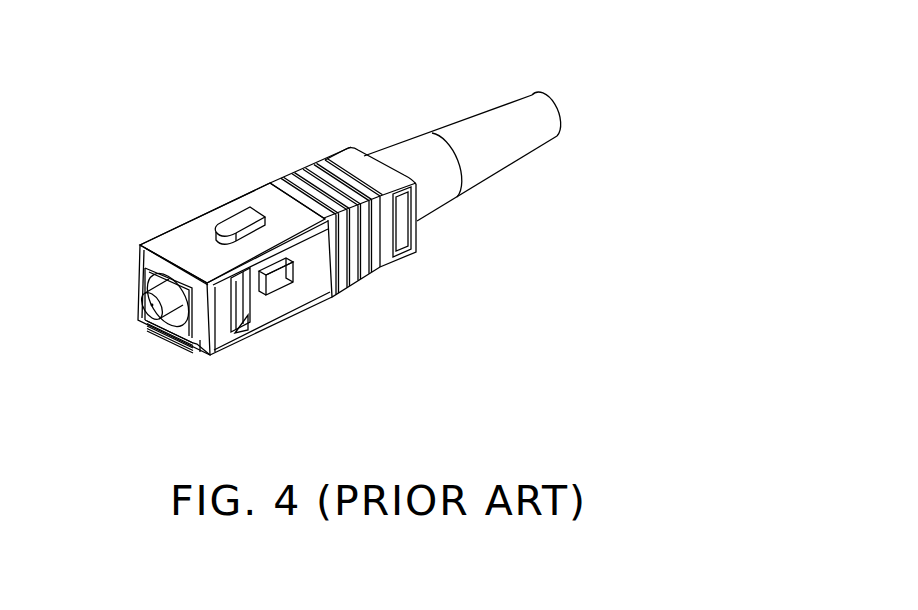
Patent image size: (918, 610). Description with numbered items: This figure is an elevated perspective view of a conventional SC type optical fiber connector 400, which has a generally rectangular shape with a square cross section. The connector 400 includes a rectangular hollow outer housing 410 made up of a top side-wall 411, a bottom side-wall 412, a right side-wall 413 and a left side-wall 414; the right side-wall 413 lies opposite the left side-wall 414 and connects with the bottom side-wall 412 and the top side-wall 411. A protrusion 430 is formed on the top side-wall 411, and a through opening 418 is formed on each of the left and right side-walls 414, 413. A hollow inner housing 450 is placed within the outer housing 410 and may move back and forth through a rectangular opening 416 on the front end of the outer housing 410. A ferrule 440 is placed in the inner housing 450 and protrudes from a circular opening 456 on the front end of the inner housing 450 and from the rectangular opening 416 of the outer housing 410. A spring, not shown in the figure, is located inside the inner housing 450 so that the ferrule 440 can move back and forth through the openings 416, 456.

The SC type optical fiber connector 400 is at (122, 124).
The outer housing 410 is at (347, 94).
The top side-wall 411 is at (183, 244).
The bottom side-wall 412 is at (172, 338).
The right side-wall 413 is at (145, 258).
The left side-wall 414 is at (311, 276).
The rectangular opening 416 is at (165, 283).
The through opening 418 is at (256, 293).
The protrusion 430 is at (240, 220).
The ferrule 440 is at (147, 333).
The inner housing 450 is at (196, 335).
The circular opening 456 is at (152, 310).